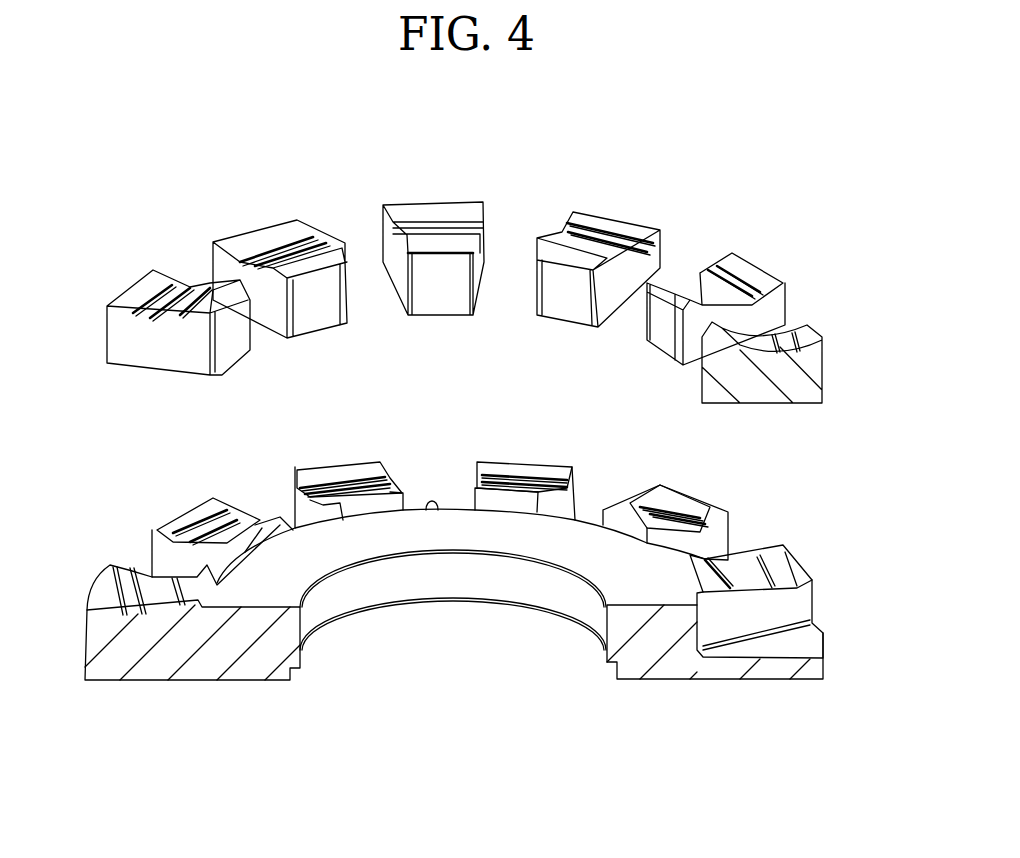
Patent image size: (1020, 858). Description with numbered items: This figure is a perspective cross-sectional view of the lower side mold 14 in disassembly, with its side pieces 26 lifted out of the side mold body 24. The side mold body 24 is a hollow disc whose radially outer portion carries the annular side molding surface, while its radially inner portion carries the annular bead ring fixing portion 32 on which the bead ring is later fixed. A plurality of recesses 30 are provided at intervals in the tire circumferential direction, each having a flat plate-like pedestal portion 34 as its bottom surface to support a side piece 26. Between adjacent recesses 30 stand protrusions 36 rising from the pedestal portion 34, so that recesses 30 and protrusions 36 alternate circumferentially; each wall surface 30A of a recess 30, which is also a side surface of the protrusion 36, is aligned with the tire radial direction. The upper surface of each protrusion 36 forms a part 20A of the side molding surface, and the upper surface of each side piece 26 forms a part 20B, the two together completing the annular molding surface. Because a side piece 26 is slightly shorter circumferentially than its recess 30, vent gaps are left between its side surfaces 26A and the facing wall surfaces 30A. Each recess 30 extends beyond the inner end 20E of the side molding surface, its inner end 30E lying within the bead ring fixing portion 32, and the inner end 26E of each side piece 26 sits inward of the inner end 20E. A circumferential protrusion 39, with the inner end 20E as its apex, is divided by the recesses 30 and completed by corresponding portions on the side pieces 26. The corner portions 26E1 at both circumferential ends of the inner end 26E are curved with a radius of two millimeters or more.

The side mold 14 is at (431, 120).
The part of the side molding surface 20A is at (197, 508).
The part of the side molding surface 20B is at (411, 212).
The inner end of the side molding surface 20E is at (210, 297).
The side mold body 24 is at (382, 608).
The side piece 26 is at (138, 292).
The side surface of the side piece 26A is at (165, 362).
The inner end of the side piece 26E is at (237, 350).
The corner portion 26E1 is at (205, 373).
The recess 30 is at (433, 495).
The wall surface of the recess 30A is at (157, 530).
The inner end of the recess 30E is at (432, 512).
The bead ring fixing portion 32 is at (472, 533).
The pedestal portion 34 is at (767, 674).
The protrusion 36 is at (370, 467).
The protrusion 39 is at (632, 508).